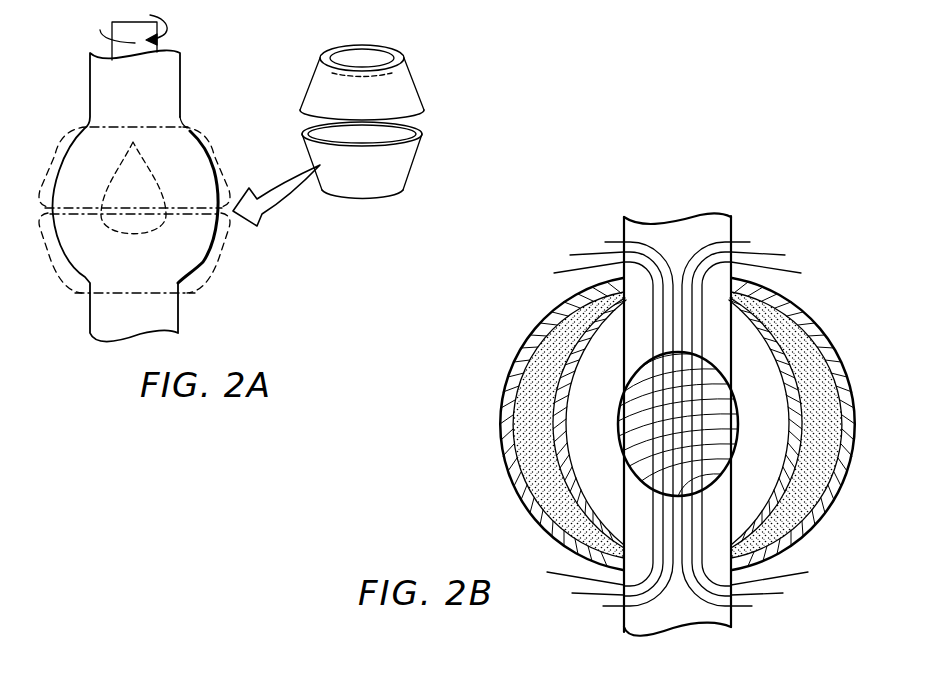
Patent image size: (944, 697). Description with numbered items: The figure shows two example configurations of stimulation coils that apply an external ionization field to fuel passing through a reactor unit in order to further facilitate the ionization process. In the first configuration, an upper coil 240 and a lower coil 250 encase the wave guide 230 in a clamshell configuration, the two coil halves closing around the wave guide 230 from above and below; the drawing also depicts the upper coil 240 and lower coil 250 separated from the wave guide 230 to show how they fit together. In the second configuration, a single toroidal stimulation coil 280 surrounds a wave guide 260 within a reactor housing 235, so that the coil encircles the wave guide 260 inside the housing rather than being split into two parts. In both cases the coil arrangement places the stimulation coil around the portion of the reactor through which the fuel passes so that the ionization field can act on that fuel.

In FIG. 2A, the wave guide 230 is at (153, 165).
In FIG. 2A, the upper coil 240 is at (335, 47).
In FIG. 2A, the lower coil 250 is at (375, 192).
In FIG. 2B, the reactor housing 235 is at (715, 335).
In FIG. 2B, the wave guide 260 is at (637, 447).
In FIG. 2B, the toroidal stimulation coil 280 is at (500, 413).